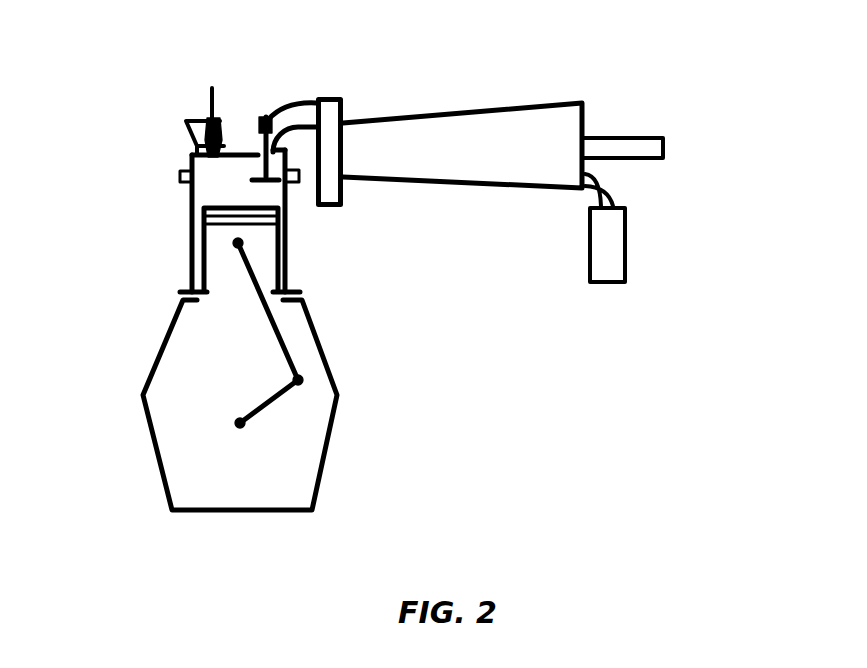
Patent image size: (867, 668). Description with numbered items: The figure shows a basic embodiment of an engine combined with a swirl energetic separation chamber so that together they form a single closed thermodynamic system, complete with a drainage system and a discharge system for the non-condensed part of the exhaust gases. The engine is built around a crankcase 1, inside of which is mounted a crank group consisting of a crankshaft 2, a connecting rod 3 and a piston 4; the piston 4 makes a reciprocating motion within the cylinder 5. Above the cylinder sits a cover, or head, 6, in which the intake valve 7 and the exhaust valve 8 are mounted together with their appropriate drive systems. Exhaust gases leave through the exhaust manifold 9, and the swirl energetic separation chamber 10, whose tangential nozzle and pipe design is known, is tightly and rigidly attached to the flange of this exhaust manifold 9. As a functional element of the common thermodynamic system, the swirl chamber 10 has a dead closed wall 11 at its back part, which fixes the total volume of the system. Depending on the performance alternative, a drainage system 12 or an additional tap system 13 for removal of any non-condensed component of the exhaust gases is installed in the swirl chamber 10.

The crankcase 1 is at (148, 372).
The crankshaft 2 is at (258, 403).
The connecting rod 3 is at (277, 340).
The piston 4 is at (217, 272).
The cylinder 5 is at (190, 223).
The cover (head) 6 is at (190, 158).
The intake valve 7 is at (210, 112).
The exhaust valve 8 is at (265, 117).
The exhaust manifold 9 is at (290, 118).
The swirl energetic separation chamber 10 is at (402, 160).
The dead closed wall 11 is at (585, 110).
The drainage system 12 is at (602, 253).
The additional tap system 13 is at (627, 137).